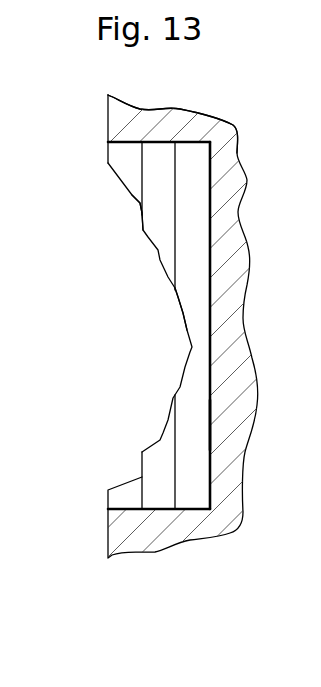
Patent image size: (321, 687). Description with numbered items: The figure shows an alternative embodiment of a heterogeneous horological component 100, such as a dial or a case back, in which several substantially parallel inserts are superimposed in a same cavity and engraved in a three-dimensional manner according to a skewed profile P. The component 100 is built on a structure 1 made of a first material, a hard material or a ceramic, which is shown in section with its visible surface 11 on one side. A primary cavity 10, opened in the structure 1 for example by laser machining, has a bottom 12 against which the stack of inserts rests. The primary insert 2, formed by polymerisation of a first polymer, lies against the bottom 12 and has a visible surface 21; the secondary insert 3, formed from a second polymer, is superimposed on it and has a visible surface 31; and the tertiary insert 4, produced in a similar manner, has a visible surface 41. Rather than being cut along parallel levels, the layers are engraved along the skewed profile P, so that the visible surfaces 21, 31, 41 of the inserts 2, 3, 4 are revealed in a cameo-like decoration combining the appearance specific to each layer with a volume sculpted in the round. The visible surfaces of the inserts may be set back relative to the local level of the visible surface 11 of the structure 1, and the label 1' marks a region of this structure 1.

The heterogeneous horological component 100 is at (159, 578).
The structure 1 is at (178, 108).
The housing portion 1' is at (160, 343).
The visible surface 11 is at (96, 127).
The visible surface 41 is at (96, 152).
The tertiary insert 4 is at (128, 168).
The secondary insert 3 is at (162, 226).
The primary insert 2 is at (200, 275).
The primary cavity 10 is at (175, 330).
The skewed profile P is at (190, 347).
The visible surface 31 is at (127, 211).
The visible surface 21 is at (167, 306).
The bottom 12 is at (197, 422).